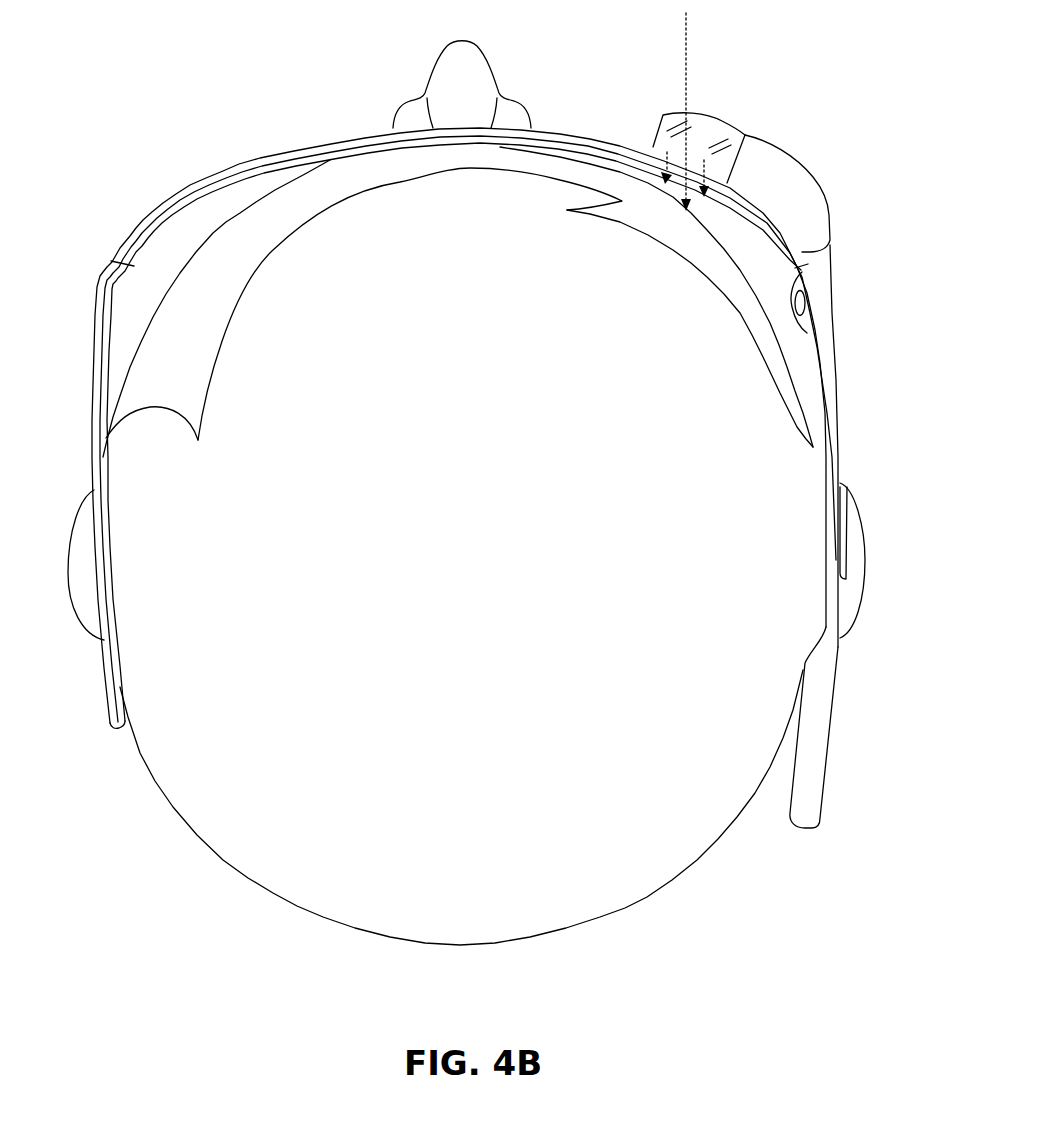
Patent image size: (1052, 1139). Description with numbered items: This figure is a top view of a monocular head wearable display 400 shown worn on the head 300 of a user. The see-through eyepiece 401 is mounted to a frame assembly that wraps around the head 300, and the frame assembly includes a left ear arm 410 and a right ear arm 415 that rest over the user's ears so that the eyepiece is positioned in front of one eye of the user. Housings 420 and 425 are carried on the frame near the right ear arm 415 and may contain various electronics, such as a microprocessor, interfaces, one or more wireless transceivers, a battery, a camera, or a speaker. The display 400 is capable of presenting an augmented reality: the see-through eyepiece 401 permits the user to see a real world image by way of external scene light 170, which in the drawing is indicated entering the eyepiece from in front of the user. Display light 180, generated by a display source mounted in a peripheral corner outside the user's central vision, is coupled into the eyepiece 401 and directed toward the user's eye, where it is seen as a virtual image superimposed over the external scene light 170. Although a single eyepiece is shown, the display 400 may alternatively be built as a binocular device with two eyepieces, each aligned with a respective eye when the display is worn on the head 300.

The head wearable display 400 is at (178, 102).
The left ear arm 410 is at (103, 358).
The right ear arm 415 is at (827, 419).
The housing 425 is at (820, 735).
The housing 420 is at (803, 200).
The see-through eyepiece 401 is at (723, 122).
The display light 180 is at (665, 157).
The external scene light 170 is at (687, 58).
The user's head 300 is at (514, 896).